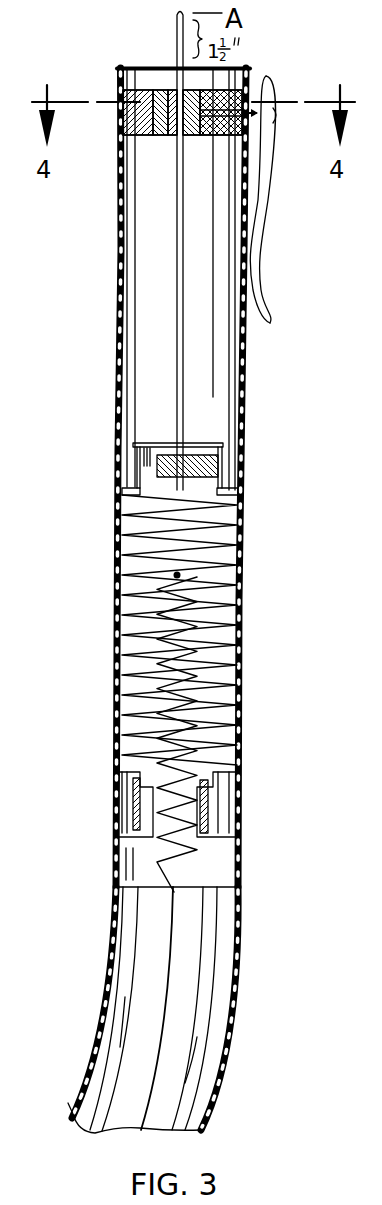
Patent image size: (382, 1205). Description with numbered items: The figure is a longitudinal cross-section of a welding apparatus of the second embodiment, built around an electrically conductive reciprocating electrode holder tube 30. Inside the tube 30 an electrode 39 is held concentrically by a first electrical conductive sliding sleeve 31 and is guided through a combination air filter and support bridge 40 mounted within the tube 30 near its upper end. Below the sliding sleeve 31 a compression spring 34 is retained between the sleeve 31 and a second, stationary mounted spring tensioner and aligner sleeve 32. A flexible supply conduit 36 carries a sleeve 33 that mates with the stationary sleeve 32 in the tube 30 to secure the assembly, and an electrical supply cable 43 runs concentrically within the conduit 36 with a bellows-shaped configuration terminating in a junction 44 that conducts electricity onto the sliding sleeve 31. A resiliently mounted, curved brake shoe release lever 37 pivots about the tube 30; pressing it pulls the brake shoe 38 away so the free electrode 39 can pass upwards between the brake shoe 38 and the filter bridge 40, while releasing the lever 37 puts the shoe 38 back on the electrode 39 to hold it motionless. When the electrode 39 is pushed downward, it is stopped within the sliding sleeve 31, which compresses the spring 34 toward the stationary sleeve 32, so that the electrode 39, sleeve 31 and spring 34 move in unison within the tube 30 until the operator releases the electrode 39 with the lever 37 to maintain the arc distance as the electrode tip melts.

The electrode holder tube 30 is at (117, 262).
The first electrical conductive sliding sleeve 31 is at (141, 445).
The stationary spring tensioner and aligner sleeve 32 is at (134, 813).
The conduit sleeve 33 is at (210, 883).
The compression spring 34 is at (120, 705).
The flexible supply conduit 36 is at (216, 1073).
The brake shoe release lever 37 is at (266, 214).
The brake shoe 38 is at (188, 137).
The electrode 39 is at (178, 223).
The combination air filter and support bridge 40 is at (147, 137).
The electrical supply cable 43 is at (165, 1013).
The junction 44 is at (122, 572).